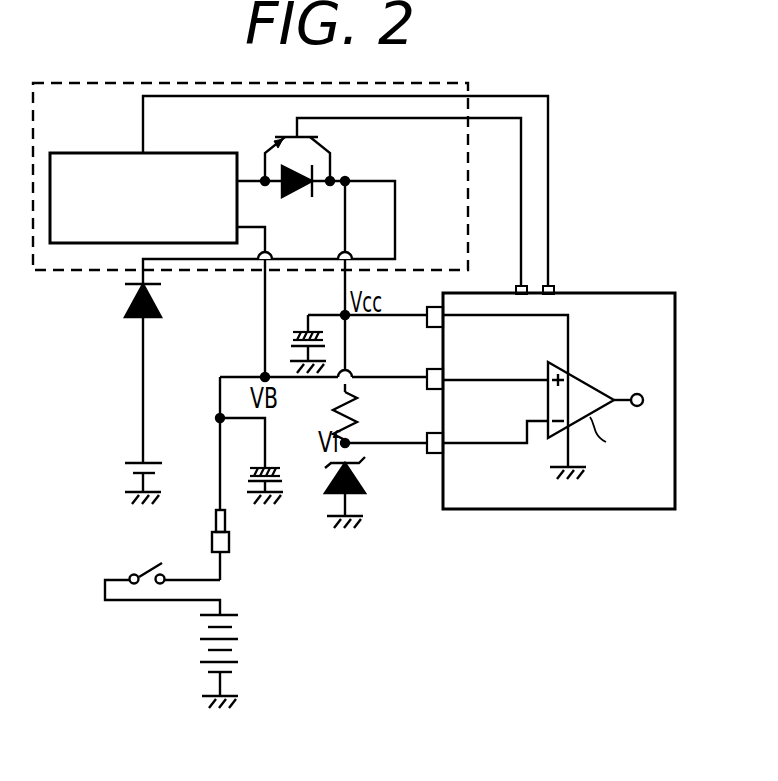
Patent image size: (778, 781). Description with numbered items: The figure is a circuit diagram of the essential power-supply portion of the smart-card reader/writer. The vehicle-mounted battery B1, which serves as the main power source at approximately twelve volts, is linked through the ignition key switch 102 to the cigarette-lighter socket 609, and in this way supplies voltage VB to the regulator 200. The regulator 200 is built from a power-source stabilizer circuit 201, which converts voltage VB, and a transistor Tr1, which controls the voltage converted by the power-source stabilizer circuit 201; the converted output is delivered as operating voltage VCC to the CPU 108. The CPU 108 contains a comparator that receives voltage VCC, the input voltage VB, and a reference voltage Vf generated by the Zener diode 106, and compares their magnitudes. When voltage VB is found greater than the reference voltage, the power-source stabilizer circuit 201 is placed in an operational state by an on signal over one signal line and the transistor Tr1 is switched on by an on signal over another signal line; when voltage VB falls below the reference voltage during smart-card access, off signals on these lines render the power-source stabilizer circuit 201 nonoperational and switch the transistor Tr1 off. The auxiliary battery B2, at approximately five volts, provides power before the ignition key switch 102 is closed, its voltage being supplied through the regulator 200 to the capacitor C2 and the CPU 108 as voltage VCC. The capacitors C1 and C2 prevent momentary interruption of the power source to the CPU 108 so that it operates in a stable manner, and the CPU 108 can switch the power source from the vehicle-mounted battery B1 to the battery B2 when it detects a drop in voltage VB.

The regulator 200 is at (92, 79).
The power-source stabilizer circuit 201 is at (107, 153).
The transistor Tr1 is at (293, 144).
The battery B2 is at (138, 463).
The capacitor C2 is at (292, 336).
The capacitor C1 is at (251, 461).
The Zener diode 106 is at (362, 480).
The cigarette-lighter socket 609 is at (230, 544).
The ignition key switch 102 is at (140, 571).
The vehicle-mounted battery B1 is at (243, 639).
The CPU 108 is at (492, 510).